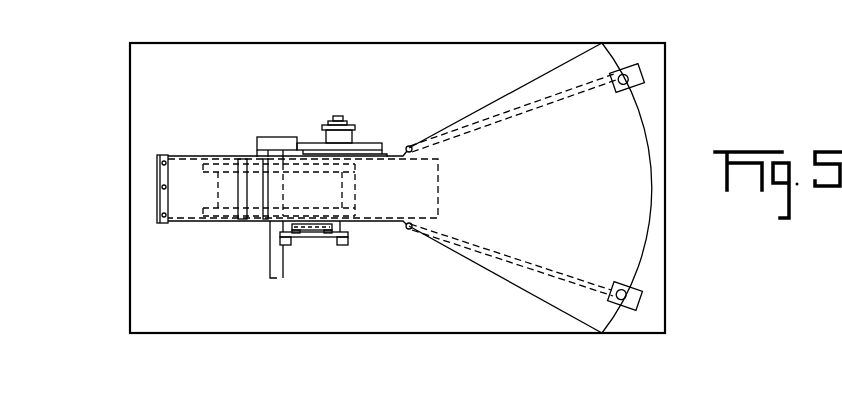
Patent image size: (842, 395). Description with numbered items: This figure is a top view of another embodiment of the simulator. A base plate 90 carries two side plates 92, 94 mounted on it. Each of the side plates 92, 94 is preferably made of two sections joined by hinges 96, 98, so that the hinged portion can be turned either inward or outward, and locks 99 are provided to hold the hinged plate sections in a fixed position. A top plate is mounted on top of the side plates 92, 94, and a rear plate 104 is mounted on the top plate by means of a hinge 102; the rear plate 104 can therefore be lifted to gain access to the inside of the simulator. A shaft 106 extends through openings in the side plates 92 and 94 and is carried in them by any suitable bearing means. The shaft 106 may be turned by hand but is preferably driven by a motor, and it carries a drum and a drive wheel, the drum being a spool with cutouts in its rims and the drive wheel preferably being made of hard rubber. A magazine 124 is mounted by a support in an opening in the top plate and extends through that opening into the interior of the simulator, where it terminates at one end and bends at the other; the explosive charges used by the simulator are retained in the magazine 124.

The base plate 90 is at (358, 313).
The side plate 92 is at (385, 223).
The side plate 94 is at (388, 154).
The hinge 96 is at (410, 230).
The hinge 98 is at (411, 147).
The lock 99 is at (632, 305).
The hinge 102 is at (165, 223).
The rear plate 104 is at (130, 299).
The shaft 106 is at (273, 278).
The magazine 124 is at (238, 196).